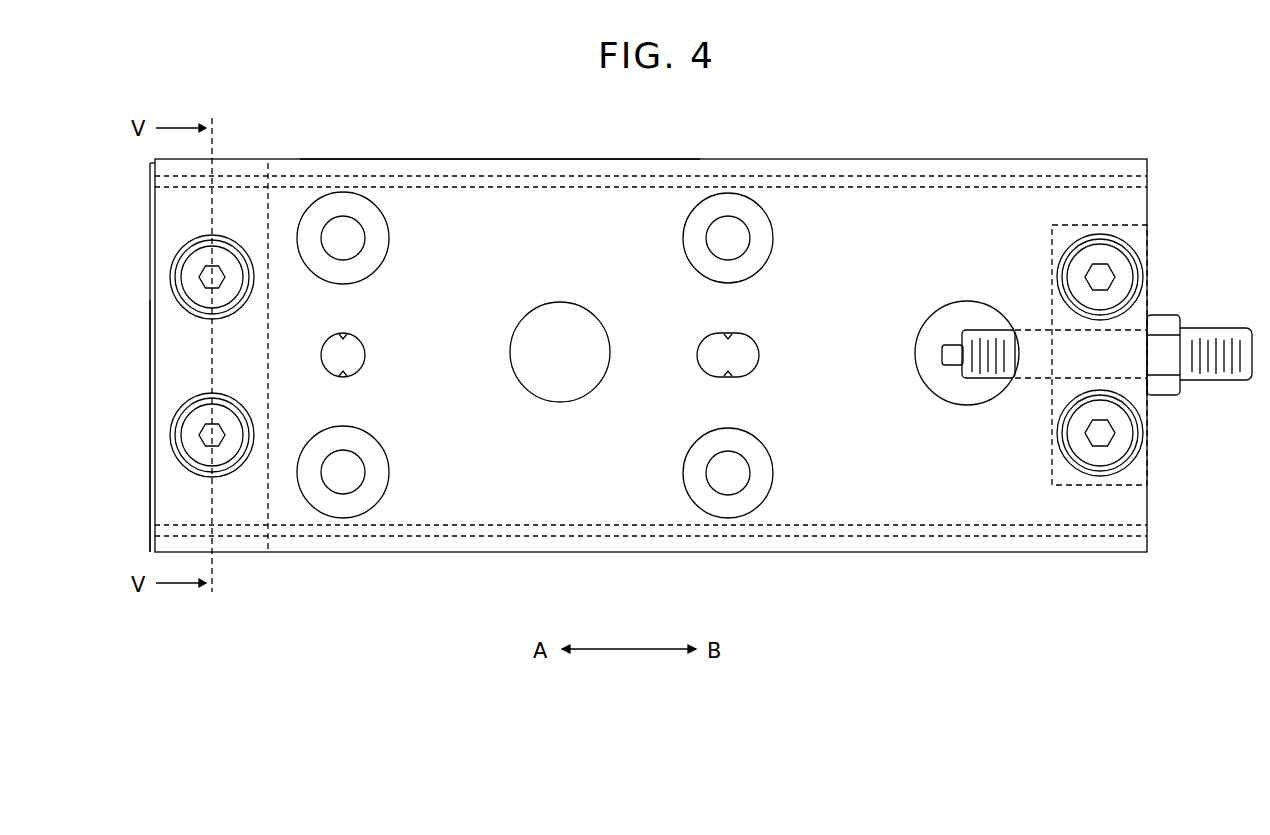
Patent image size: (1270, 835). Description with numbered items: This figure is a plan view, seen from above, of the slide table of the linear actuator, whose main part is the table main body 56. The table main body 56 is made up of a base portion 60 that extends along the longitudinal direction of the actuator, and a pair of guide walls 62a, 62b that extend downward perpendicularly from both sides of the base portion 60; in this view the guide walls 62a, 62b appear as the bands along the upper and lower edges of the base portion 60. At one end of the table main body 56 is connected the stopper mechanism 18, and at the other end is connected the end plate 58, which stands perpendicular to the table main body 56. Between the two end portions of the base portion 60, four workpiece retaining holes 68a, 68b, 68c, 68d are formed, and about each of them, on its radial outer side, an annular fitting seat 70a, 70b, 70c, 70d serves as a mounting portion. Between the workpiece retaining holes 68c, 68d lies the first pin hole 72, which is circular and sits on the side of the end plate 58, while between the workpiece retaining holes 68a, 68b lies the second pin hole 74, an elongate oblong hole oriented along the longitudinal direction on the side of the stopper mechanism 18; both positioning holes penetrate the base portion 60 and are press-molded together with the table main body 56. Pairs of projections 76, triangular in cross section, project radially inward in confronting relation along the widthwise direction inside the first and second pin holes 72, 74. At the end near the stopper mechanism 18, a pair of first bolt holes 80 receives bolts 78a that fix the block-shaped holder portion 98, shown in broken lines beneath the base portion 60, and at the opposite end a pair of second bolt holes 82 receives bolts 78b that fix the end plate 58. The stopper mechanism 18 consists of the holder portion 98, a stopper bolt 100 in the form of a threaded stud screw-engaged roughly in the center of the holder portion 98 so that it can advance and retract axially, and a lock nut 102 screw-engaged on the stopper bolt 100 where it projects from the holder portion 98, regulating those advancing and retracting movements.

The stopper mechanism 18 is at (1087, 359).
The table main body 56 is at (970, 503).
The end plate 58 is at (149, 469).
The base portion 60 is at (506, 200).
The guide wall 62a is at (789, 172).
The guide wall 62b is at (784, 540).
The workpiece retaining hole 68a is at (710, 238).
The workpiece retaining hole 68b is at (710, 472).
The workpiece retaining hole 68c is at (355, 246).
The workpiece retaining hole 68d is at (356, 462).
The fitting seat 70a is at (774, 240).
The fitting seat 70b is at (774, 476).
The fitting seat 70c is at (390, 238).
The fitting seat 70d is at (390, 475).
The first pin hole 72 is at (366, 355).
The second pin hole 74 is at (745, 358).
The projection 76 is at (343, 336).
The bolt 78a is at (1126, 272).
The bolt 78b is at (233, 252).
The first bolt hole 80 is at (1068, 278).
The second bolt hole 82 is at (190, 277).
The holder portion 98 is at (1148, 234).
The stopper bolt 100 is at (1234, 382).
The lock nut 102 is at (1168, 396).